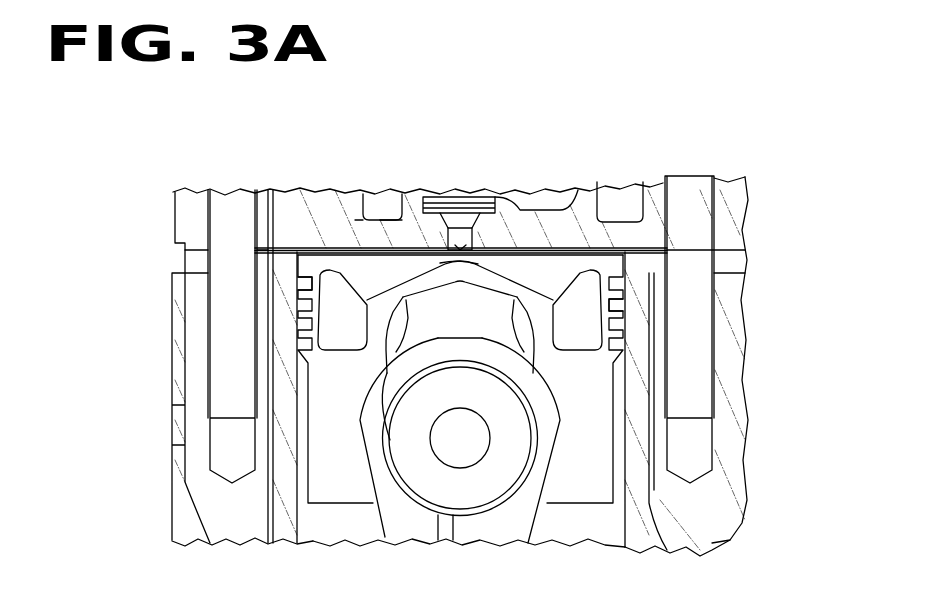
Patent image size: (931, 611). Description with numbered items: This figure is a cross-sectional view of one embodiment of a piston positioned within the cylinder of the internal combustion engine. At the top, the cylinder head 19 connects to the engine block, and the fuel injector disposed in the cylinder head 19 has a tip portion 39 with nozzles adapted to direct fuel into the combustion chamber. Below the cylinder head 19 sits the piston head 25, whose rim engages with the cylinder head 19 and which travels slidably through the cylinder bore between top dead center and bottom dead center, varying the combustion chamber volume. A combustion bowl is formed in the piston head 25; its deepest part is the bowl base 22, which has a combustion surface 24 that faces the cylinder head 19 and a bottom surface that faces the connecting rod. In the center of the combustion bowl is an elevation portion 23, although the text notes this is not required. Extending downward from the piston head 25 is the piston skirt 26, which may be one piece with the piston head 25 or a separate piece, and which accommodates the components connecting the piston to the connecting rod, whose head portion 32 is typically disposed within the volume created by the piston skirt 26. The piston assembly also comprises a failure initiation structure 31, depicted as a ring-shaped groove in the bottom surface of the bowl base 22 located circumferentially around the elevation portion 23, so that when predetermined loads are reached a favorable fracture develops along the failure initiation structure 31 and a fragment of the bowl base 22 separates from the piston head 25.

The cylinder head 19 is at (308, 203).
The tip portion 39 is at (468, 240).
The bowl base 22 is at (365, 290).
The elevation portion 23 is at (470, 263).
The combustion surface 24 is at (470, 263).
The piston head 25 is at (618, 293).
The piston skirt 26 is at (302, 482).
The failure initiation structure 31 is at (515, 297).
The head portion 32 is at (555, 437).